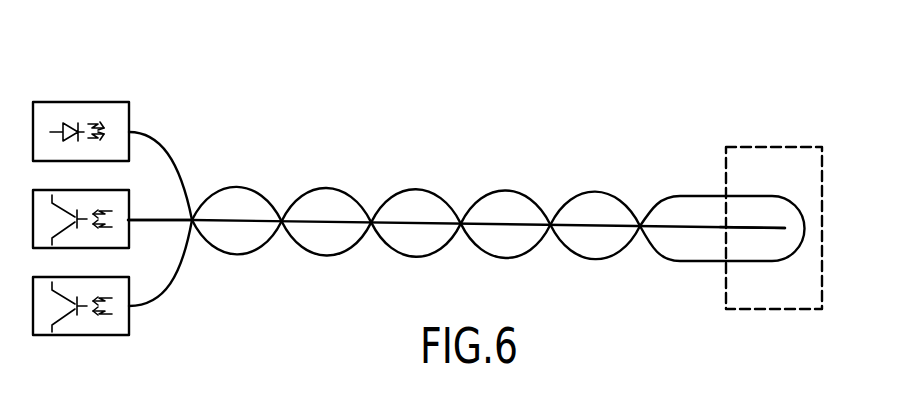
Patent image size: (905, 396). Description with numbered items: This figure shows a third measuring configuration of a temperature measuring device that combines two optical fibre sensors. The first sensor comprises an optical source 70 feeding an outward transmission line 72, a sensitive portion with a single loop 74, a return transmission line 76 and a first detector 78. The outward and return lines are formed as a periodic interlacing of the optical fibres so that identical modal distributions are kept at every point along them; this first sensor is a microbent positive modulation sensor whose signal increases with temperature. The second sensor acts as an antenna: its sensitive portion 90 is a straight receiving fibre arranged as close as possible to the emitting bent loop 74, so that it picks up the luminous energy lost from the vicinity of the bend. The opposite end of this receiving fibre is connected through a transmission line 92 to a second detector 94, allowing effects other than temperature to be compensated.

The optical source 70 is at (73, 101).
The second detector 94 is at (130, 211).
The first detector 78 is at (80, 338).
The outward transmission line 72 is at (322, 188).
The return transmission line 76 is at (322, 257).
The transmission line 92 is at (504, 220).
The sensitive portion with a single loop 74 is at (777, 195).
The sensitive portion of second sensor 90 is at (753, 232).